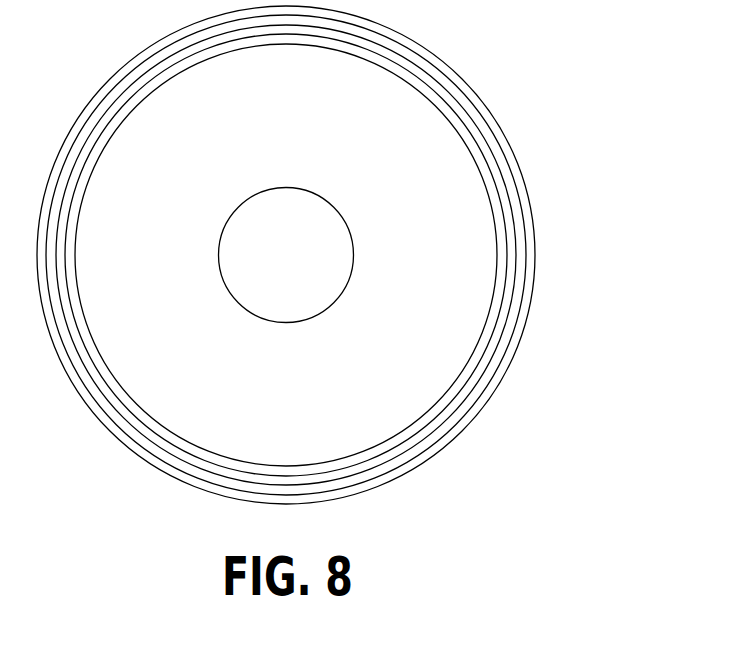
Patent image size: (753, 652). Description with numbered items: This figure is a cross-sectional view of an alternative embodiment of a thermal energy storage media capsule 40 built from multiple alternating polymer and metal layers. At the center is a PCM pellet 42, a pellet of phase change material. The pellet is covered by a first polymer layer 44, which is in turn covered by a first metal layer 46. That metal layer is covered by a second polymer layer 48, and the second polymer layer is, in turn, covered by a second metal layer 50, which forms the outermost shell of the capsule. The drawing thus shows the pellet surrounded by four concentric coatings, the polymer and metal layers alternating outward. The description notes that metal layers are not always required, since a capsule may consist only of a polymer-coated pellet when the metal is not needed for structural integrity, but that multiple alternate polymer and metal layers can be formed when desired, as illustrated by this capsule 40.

The capsule 40 is at (611, 66).
The PCM pellet 42 is at (388, 78).
The first polymer layer 44 is at (445, 108).
The first metal layer 46 is at (475, 133).
The second polymer layer 48 is at (500, 158).
The second metal layer 50 is at (522, 187).